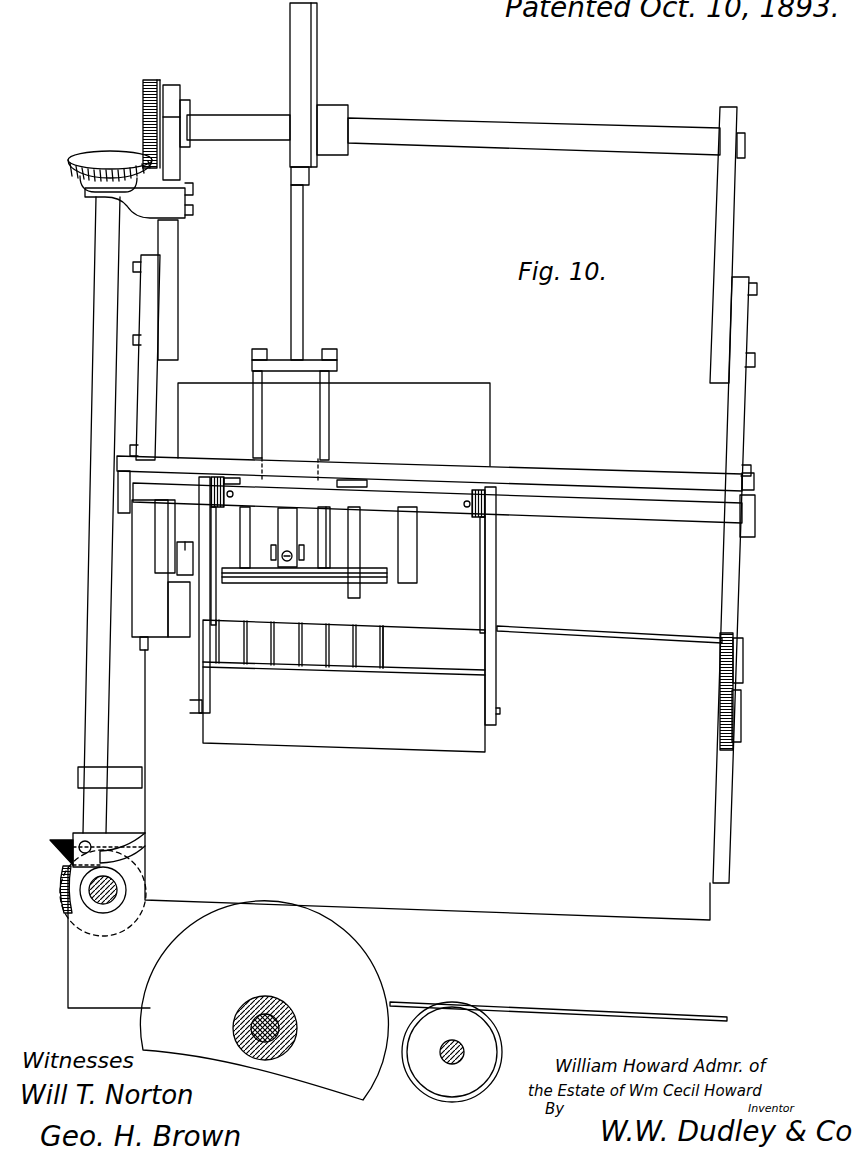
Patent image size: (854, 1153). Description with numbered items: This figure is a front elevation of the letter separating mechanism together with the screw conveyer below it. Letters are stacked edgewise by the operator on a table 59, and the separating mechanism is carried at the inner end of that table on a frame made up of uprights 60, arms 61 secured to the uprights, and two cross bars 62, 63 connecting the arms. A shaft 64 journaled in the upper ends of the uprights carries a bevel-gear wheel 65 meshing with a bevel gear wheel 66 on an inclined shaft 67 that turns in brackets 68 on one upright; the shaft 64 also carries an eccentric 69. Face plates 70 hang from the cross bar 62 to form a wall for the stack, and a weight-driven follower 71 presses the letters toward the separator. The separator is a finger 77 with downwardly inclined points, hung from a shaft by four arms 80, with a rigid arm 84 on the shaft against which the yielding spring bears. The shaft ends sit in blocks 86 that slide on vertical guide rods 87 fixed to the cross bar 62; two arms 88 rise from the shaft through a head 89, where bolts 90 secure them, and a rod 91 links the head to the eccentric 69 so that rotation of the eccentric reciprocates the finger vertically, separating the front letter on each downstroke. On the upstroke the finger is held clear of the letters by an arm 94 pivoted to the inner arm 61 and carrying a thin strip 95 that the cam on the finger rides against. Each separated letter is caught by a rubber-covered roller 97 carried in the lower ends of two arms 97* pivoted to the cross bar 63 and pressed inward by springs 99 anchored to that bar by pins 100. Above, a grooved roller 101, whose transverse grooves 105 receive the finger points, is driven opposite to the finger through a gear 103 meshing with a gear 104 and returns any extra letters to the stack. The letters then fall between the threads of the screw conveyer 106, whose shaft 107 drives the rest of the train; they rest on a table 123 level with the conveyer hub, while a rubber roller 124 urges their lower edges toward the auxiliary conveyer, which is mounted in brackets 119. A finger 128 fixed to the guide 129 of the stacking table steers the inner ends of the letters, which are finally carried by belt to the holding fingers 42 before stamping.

The finger 42 is at (188, 549).
The table 59 is at (609, 628).
The uprights 60 is at (443, 495).
The arms 61 is at (118, 486).
The cross bar 62 is at (435, 469).
The cross bar 63 is at (437, 507).
The shaft 64 is at (466, 127).
The bevel-gear wheel 65 is at (143, 118).
The bevel gear wheel 66 is at (110, 161).
The inclined shaft 67 is at (94, 515).
The brackets 68 is at (128, 778).
The eccentric 69 is at (319, 94).
The face plates 70 is at (287, 541).
The follower 71 is at (334, 424).
The finger 77 is at (304, 584).
The arms 80 is at (288, 537).
The arm 84 is at (287, 537).
The blocks 86 is at (230, 478).
The guide rods 87 is at (360, 549).
The arms 88 is at (302, 415).
The head 89 is at (305, 368).
The bolts 90 is at (295, 345).
The rod 91 is at (308, 272).
The arm 94 is at (150, 575).
The strip 95 is at (180, 609).
The roller 97 is at (344, 686).
The springs 99 is at (480, 592).
The pins 100 is at (233, 494).
The roller 101 is at (407, 647).
The gear 103 is at (735, 662).
The gear 104 is at (733, 717).
The transverse grooves 105 is at (300, 644).
The screw conveyer 106 is at (264, 1000).
The shaft 107 is at (290, 1031).
The brackets 119 is at (103, 900).
The table 123 is at (558, 1004).
The roller 124 is at (489, 1044).
The finger 128 is at (135, 852).
The guide 129 is at (389, 829).